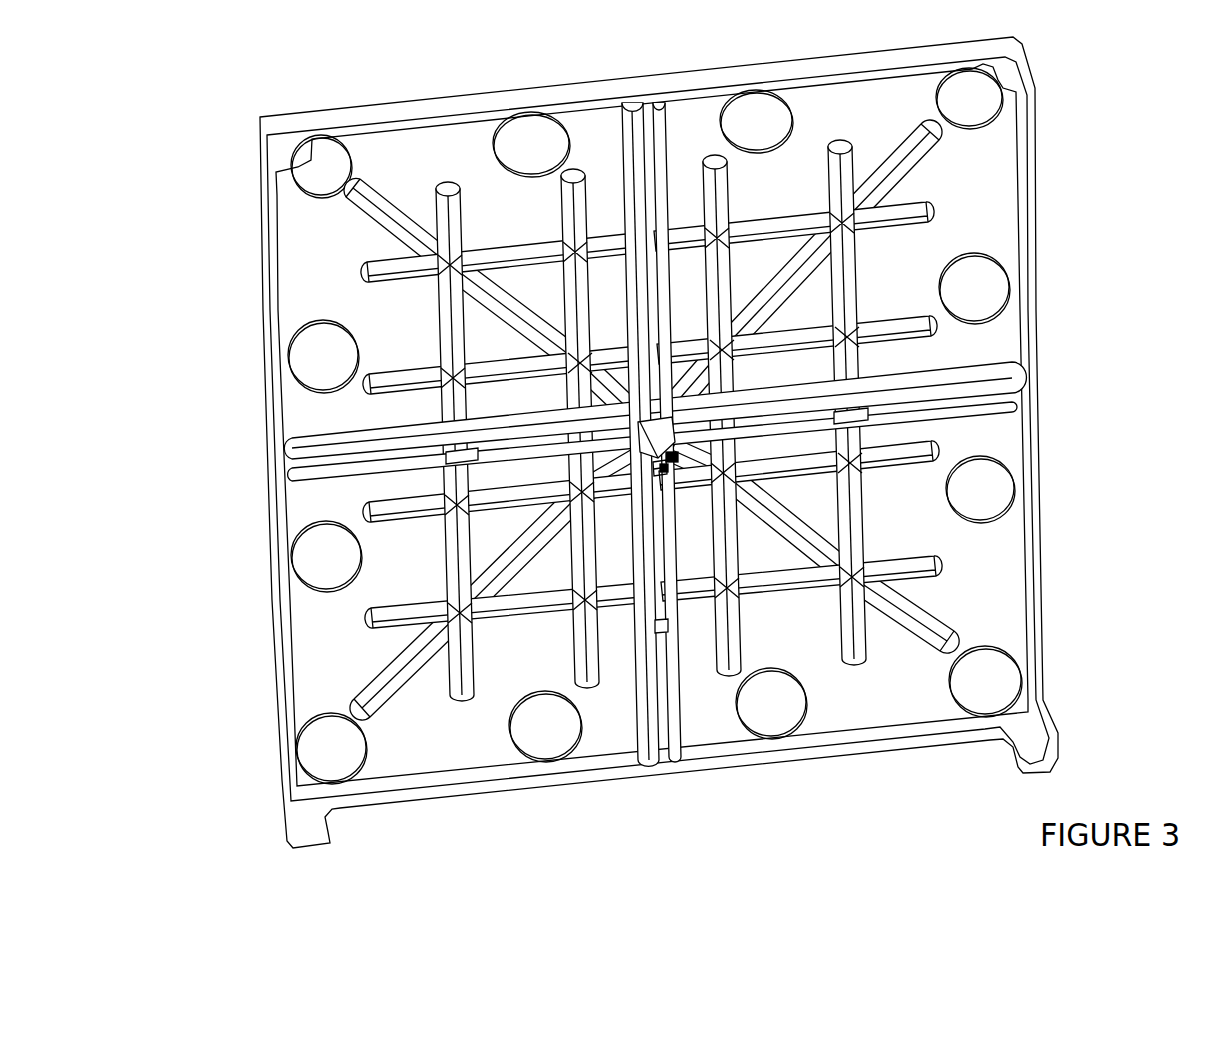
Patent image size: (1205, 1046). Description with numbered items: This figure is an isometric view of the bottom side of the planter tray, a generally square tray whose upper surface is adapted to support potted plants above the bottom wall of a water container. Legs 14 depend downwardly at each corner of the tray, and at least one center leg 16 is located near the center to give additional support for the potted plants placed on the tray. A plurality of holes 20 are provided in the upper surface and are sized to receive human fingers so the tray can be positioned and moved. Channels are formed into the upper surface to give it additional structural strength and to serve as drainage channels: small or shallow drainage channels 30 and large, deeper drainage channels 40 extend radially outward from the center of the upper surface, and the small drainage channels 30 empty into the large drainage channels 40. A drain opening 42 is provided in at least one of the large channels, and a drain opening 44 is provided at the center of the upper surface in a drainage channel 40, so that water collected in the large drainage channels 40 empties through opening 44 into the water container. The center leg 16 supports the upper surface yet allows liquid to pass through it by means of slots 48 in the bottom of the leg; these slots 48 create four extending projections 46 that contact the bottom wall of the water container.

The legs 14 is at (289, 133).
The center leg 16 is at (660, 436).
The holes 20 is at (1005, 503).
The drainage channels 30 is at (905, 158).
The large drainage channels 40 is at (647, 133).
The drain opening 42 is at (458, 460).
The drain opening 44 is at (666, 470).
The extending projections 46 is at (678, 457).
The slots 48 is at (668, 466).